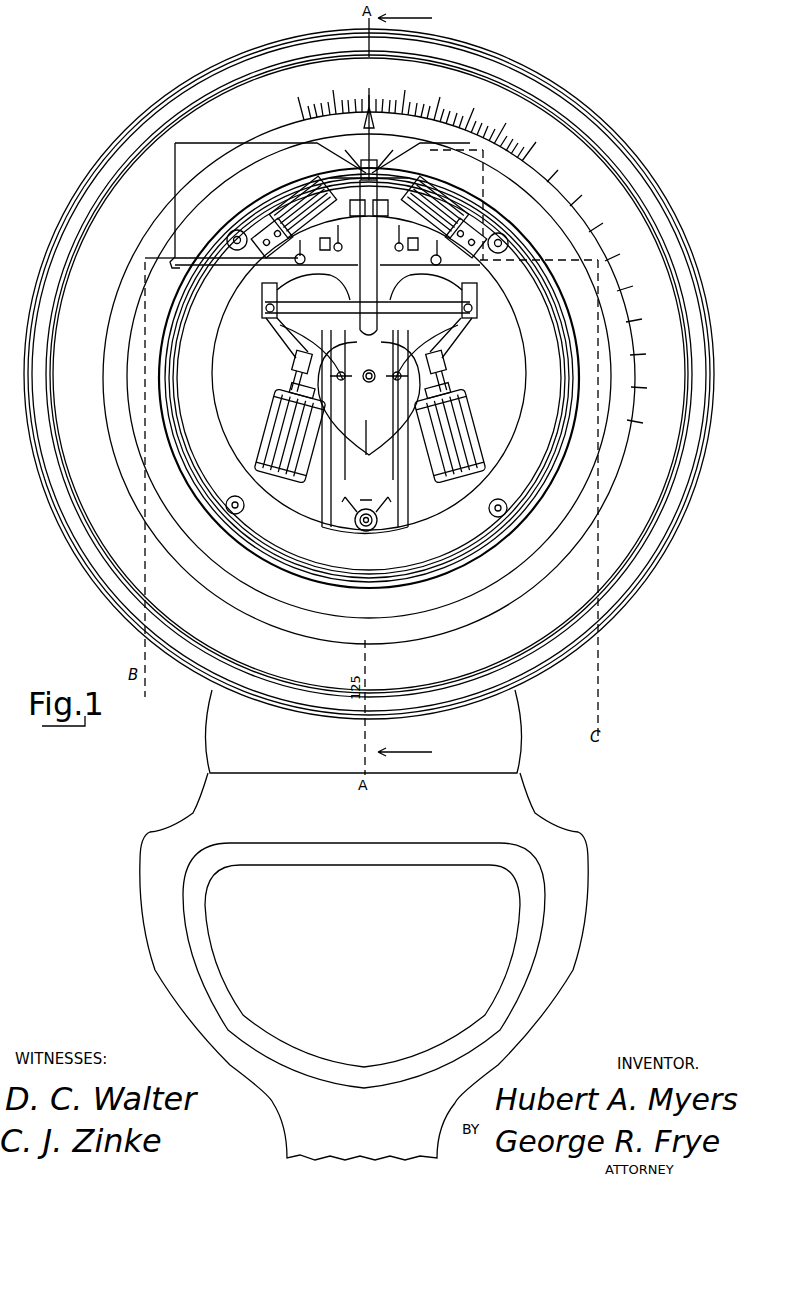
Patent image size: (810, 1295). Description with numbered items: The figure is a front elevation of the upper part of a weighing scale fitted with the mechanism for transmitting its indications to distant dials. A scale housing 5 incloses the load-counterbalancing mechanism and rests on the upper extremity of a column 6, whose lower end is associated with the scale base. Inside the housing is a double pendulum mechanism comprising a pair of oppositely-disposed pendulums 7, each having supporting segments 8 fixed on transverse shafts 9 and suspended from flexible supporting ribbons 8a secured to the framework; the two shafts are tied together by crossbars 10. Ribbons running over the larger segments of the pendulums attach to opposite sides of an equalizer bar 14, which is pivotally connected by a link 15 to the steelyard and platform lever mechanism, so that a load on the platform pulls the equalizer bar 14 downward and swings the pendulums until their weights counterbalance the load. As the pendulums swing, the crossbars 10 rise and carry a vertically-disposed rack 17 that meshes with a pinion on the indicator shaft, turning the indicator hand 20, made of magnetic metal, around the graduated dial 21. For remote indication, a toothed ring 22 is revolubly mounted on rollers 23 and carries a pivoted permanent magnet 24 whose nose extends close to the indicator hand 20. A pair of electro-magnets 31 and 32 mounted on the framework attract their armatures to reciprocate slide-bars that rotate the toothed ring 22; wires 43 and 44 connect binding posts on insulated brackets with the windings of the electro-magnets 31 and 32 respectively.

The scale housing 5 is at (369, 374).
The column 6 is at (575, 875).
The pendulums 7 is at (470, 400).
The supporting segments 8 is at (478, 300).
The flexible supporting ribbons 8a is at (408, 380).
The transverse shafts 9 is at (474, 318).
The crossbars 10 is at (455, 332).
The equalizer bar 14 is at (392, 507).
The link 15 is at (390, 482).
The rack 17 is at (350, 462).
The indicator hand 20 is at (380, 122).
The dial 21 is at (580, 158).
The toothed ring 22 is at (512, 242).
The rollers 23 is at (492, 462).
The permanent magnet 24 is at (432, 170).
The electro-magnet 31 is at (258, 248).
The electro-magnet 32 is at (498, 222).
The wire 43 is at (311, 260).
The wire 44 is at (420, 260).